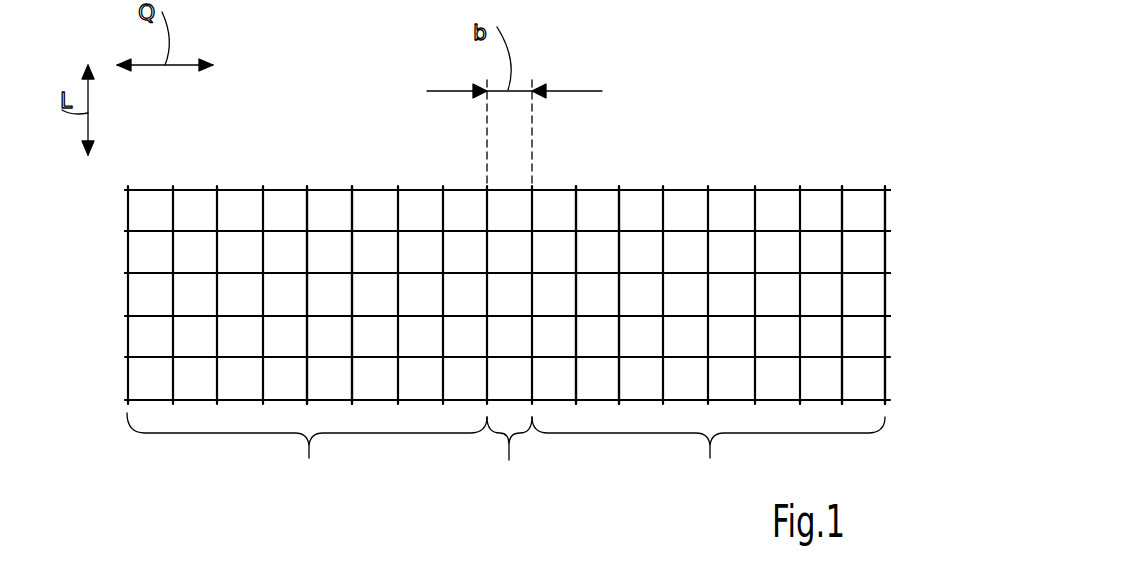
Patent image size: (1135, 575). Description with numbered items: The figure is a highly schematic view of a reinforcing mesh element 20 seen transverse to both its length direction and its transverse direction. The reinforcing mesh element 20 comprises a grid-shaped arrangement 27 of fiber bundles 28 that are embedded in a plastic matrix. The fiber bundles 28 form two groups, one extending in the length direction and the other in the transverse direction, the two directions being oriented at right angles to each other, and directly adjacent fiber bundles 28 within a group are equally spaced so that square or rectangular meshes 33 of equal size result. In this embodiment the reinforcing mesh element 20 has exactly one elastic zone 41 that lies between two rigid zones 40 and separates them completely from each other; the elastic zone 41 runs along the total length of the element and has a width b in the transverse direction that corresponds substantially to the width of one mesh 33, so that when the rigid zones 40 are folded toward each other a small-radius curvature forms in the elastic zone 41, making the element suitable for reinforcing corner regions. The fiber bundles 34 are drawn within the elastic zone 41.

The reinforcing mesh element 20 is at (837, 147).
The grid-shaped arrangement 27 is at (900, 260).
The fiber bundles 28 is at (153, 272).
The meshes 33 is at (374, 208).
The longitudinal threads of center zone 34 is at (618, 232).
The rigid zones 40 is at (506, 451).
The elastic zone 41 is at (509, 453).